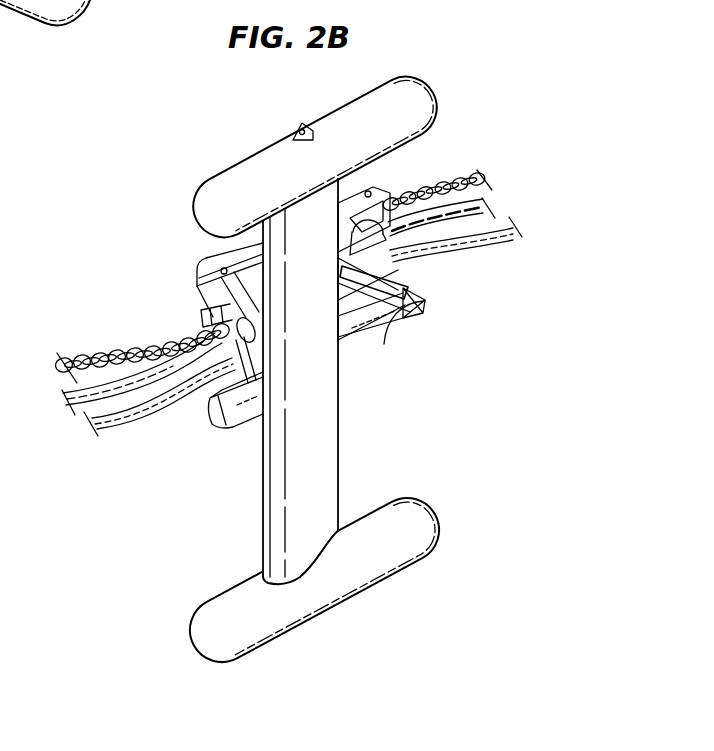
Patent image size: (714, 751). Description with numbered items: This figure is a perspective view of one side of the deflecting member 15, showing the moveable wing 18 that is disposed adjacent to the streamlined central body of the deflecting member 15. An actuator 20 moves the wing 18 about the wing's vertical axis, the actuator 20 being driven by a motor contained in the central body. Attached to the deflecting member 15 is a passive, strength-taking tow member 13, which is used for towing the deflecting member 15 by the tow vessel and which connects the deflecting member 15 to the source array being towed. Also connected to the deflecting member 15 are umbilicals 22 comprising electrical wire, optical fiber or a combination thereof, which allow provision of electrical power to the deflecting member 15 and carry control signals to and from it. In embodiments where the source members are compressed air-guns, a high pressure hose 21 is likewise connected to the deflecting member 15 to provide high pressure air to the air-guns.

The tow member 13 is at (97, 357).
The deflecting member 15 is at (200, 148).
The moveable wing 18 is at (327, 425).
The actuator 20 is at (415, 288).
The high pressure hose 21 is at (172, 392).
The umbilicals 22 is at (112, 394).